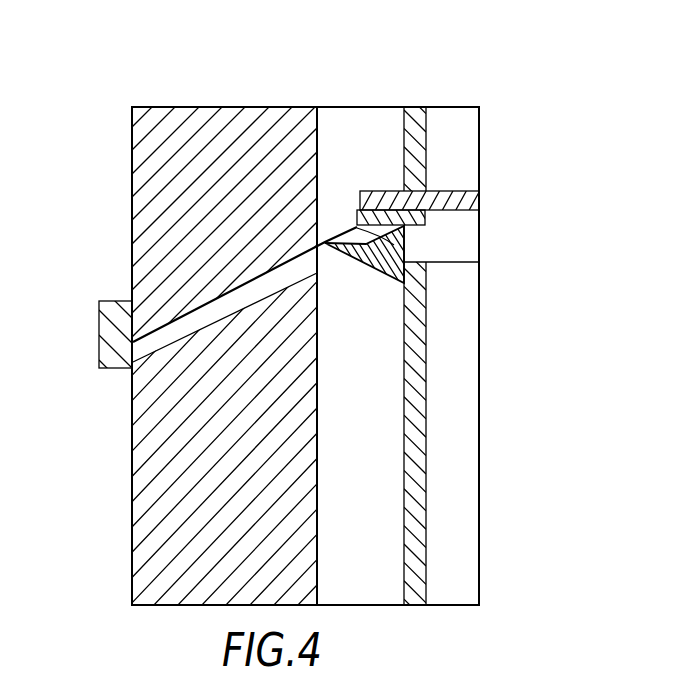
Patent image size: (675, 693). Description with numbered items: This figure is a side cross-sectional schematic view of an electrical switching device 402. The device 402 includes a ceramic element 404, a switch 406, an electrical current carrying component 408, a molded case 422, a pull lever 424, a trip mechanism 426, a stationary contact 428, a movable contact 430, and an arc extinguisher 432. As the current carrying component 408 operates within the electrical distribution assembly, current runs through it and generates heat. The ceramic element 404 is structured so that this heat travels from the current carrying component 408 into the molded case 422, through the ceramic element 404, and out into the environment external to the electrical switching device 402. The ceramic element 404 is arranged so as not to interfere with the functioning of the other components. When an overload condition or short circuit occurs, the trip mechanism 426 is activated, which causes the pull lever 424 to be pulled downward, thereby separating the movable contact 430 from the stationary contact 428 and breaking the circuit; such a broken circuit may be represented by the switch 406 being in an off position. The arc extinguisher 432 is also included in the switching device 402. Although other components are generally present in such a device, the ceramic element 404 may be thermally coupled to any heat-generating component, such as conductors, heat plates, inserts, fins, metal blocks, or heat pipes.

The electrical switching device 402 is at (196, 68).
The ceramic element 404 is at (142, 157).
The switch 406 is at (106, 327).
The electrical current carrying component 408 is at (417, 108).
The case 422 is at (372, 118).
The lever 424 is at (298, 268).
The trip mechanism 426 is at (387, 278).
The stationary contact 428 is at (477, 202).
The movable contact 430 is at (426, 219).
The arc extinguisher 432 is at (463, 245).